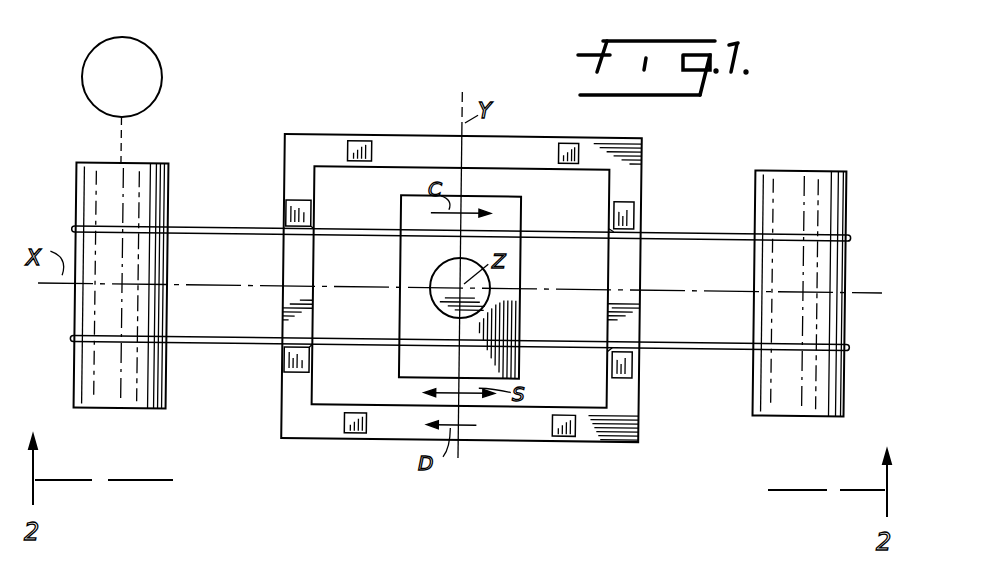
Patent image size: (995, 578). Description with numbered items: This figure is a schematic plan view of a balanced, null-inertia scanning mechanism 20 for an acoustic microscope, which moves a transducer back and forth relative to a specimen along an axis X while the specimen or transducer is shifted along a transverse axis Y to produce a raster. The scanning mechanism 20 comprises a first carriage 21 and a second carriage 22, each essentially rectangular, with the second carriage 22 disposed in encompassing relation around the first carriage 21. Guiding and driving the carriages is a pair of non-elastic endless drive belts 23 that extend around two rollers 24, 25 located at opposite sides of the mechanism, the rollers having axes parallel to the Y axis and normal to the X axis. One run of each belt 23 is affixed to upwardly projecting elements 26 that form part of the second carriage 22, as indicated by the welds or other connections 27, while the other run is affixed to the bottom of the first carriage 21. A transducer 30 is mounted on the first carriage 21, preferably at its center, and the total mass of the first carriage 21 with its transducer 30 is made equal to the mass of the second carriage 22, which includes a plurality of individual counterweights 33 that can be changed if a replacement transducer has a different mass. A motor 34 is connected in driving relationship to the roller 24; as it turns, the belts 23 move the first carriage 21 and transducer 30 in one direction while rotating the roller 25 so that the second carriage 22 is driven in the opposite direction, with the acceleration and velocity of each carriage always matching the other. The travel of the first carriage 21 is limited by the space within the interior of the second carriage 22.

The scanning mechanism 20 is at (648, 172).
The first carriage 21 is at (520, 326).
The second carriage 22 is at (626, 440).
The endless drive belts 23 is at (200, 238).
The roller 24 is at (150, 172).
The roller 25 is at (803, 185).
The upwardly projecting elements 26 is at (290, 200).
The welds or other connections 27 is at (312, 229).
The transducer 30 is at (432, 280).
The counterweights 33 is at (358, 142).
The motor 34 is at (163, 78).